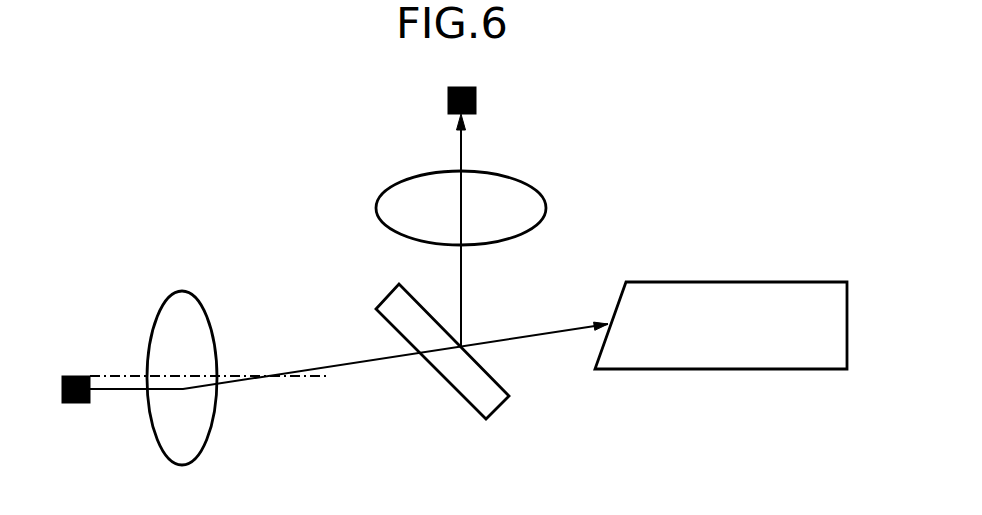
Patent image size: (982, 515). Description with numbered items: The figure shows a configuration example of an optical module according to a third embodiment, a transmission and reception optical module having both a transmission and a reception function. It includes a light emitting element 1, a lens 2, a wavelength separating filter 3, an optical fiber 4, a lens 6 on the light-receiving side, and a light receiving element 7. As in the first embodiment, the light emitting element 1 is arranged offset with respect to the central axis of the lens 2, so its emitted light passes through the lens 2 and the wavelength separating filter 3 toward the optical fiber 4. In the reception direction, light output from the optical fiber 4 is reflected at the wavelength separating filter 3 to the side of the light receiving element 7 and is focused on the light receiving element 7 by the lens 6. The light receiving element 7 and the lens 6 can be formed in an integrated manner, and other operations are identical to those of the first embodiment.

The light emitting element 1 is at (73, 376).
The lens 2 is at (182, 292).
The wavelength separating filter 3 is at (381, 302).
The optical fiber 4 is at (683, 282).
The lens 6 is at (547, 203).
The light receiving element 7 is at (477, 97).